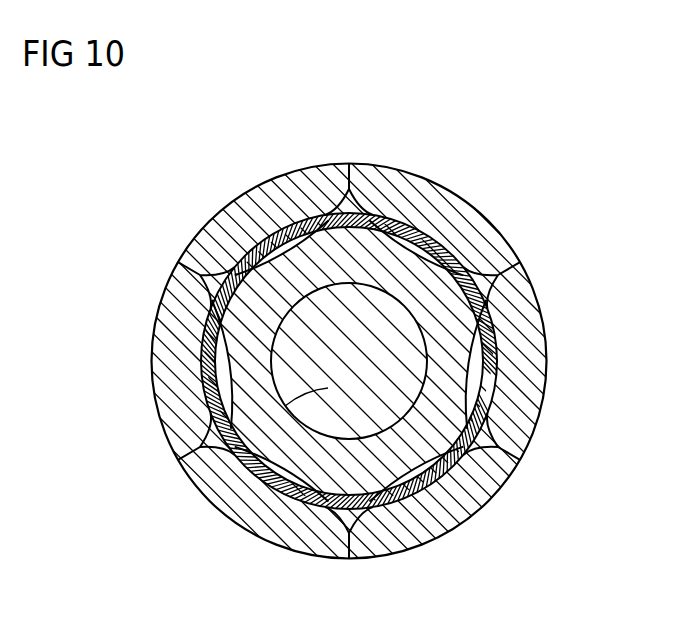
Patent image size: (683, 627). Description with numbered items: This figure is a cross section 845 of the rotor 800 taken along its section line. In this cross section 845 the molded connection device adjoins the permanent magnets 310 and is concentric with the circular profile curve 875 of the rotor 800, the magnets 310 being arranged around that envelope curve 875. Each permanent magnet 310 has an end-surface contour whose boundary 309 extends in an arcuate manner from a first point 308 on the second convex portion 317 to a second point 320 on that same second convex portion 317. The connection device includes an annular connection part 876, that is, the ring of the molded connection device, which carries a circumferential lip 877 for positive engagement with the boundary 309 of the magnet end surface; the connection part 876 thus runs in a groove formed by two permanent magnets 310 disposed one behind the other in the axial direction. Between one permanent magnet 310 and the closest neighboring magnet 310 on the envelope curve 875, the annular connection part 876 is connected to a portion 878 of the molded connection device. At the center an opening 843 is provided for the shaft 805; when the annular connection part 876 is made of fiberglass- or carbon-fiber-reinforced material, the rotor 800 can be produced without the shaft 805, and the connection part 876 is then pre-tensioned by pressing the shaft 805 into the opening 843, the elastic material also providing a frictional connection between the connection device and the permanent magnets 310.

The rotor 800 is at (317, 120).
The permanent magnet 310 is at (290, 188).
The first point 308 is at (355, 184).
The boundary 309 is at (494, 227).
The second convex portion 317 is at (412, 218).
The second point 320 is at (521, 259).
The shaft 805 is at (200, 498).
The opening 843 is at (330, 390).
The cross section 845 is at (197, 232).
The circular profile curve 875 is at (151, 385).
The annular connection part 876 is at (497, 338).
The circumferential lip 877 is at (228, 222).
The portion of the molded connection device 878 is at (460, 370).